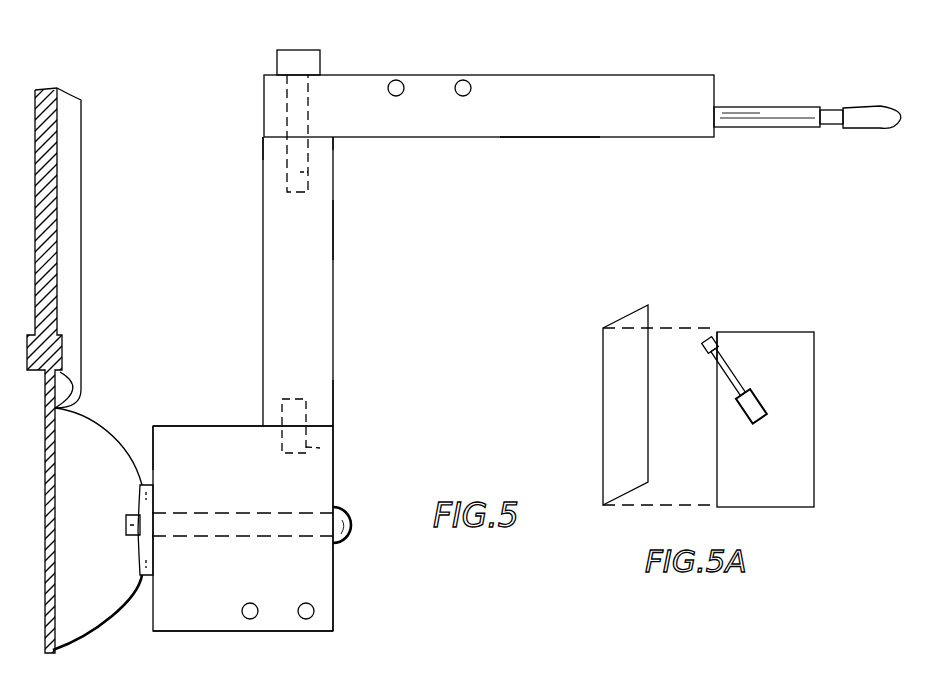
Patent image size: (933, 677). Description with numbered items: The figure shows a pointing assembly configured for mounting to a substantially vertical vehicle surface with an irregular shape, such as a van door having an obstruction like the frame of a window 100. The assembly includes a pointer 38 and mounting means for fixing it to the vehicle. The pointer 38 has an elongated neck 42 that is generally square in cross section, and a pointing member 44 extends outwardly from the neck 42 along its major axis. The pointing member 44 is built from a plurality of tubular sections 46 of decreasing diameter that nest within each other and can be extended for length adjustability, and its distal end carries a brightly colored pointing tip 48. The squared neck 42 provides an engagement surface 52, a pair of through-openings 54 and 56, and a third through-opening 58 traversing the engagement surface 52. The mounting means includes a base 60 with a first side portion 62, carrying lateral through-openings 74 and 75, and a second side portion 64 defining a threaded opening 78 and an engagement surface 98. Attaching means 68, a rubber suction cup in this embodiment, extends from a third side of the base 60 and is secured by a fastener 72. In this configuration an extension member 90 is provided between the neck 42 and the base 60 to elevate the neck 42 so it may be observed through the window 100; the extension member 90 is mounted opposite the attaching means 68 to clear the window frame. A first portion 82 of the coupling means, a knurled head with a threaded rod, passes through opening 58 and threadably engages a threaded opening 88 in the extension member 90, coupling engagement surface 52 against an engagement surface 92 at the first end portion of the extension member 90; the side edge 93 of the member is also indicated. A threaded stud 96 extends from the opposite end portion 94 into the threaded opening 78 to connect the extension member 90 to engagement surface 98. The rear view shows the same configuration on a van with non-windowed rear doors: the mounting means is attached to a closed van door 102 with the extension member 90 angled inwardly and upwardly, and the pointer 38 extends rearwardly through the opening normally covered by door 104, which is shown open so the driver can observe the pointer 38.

In FIG. 5, the pointer 38 is at (600, 75).
In FIG. 5A, the pointer 38 is at (707, 338).
In FIG. 5, the elongated neck 42 is at (545, 137).
In FIG. 5, the pointing member 44 is at (830, 124).
In FIG. 5, the tubular sections 46 is at (745, 127).
In FIG. 5, the pointing tip 48 is at (862, 112).
In FIG. 5, the engagement surface 52 is at (333, 148).
In FIG. 5, the through-opening 54 is at (400, 80).
In FIG. 5, the through-opening 56 is at (470, 80).
In FIG. 5, the third through-opening 58 is at (288, 98).
In FIG. 5, the base 60 is at (158, 632).
In FIG. 5A, the base 60 is at (757, 406).
In FIG. 5, the first side portion 62 is at (238, 632).
In FIG. 5, the second side portion 64 is at (165, 435).
In FIG. 5, the attaching means 68 is at (83, 617).
In FIG. 5, the fastener 72 is at (345, 515).
In FIG. 5, the through-opening 74 is at (256, 604).
In FIG. 5, the hole 75 is at (314, 612).
In FIG. 5, the threaded opening 78 is at (320, 448).
In FIG. 5, the first portion of coupling means 82 is at (282, 58).
In FIG. 5, the threaded opening 88 is at (307, 170).
In FIG. 5, the extension member 90 is at (333, 322).
In FIG. 5A, the extension member 90 is at (732, 377).
In FIG. 5, the engagement surface 92 is at (277, 137).
In FIG. 5, the side edge 93 is at (333, 227).
In FIG. 5, the opposite end portion 94 is at (333, 403).
In FIG. 5, the threaded stud 96 is at (280, 413).
In FIG. 5, the engagement surface 98 is at (185, 430).
In FIG. 5, the window 100 is at (81, 178).
In FIG. 5A, the closed van door 102 is at (783, 331).
In FIG. 5A, the door 104 is at (605, 328).